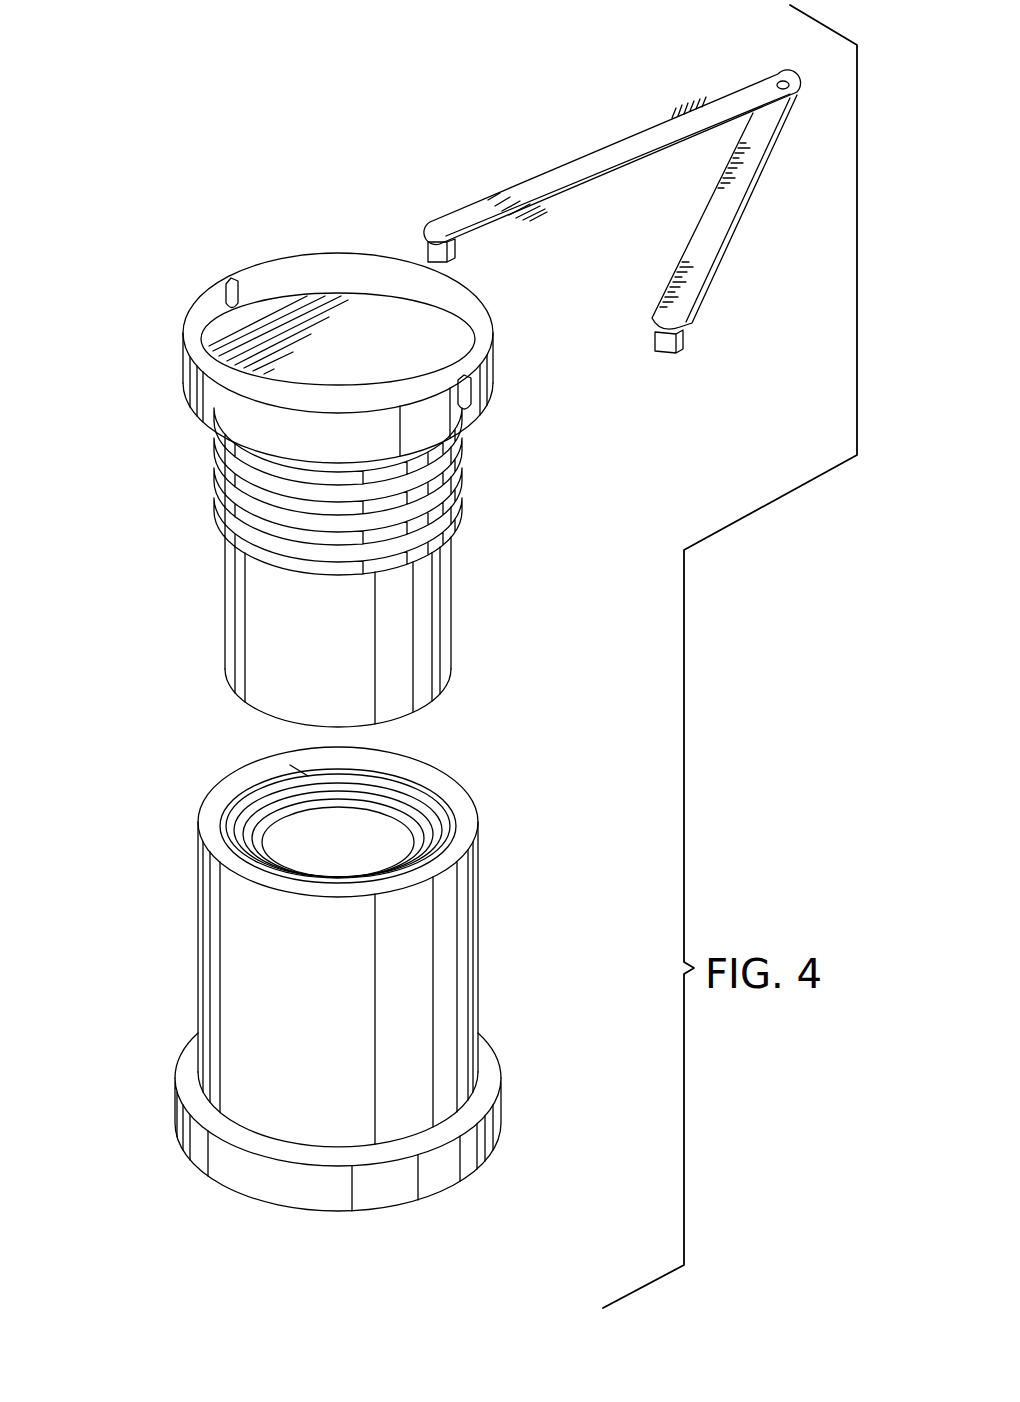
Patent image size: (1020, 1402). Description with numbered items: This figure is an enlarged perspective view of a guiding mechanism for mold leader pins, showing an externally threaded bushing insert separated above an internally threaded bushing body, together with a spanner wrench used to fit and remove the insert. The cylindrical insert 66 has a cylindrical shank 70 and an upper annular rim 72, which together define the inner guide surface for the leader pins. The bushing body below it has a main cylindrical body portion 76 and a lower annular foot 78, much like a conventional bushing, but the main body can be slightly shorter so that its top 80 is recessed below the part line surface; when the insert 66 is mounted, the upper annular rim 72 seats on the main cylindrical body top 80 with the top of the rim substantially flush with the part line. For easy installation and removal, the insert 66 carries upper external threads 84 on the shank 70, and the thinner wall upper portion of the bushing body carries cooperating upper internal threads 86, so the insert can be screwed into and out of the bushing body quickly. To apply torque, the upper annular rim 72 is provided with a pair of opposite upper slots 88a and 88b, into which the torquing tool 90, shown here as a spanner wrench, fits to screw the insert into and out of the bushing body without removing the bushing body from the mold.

The cylindrical insert 66 is at (198, 590).
The cylindrical shank 70 is at (432, 648).
The upper annular rim 72 is at (185, 383).
The main cylindrical body portion 76 is at (455, 975).
The lower annular foot 78 is at (492, 1130).
The main cylindrical body top 80 is at (207, 816).
The upper external threads 84 is at (450, 505).
The upper internal threads 86 is at (420, 815).
The upper slot 88a is at (230, 296).
The upper slot 88b is at (466, 392).
The torquing tool 90 is at (630, 122).